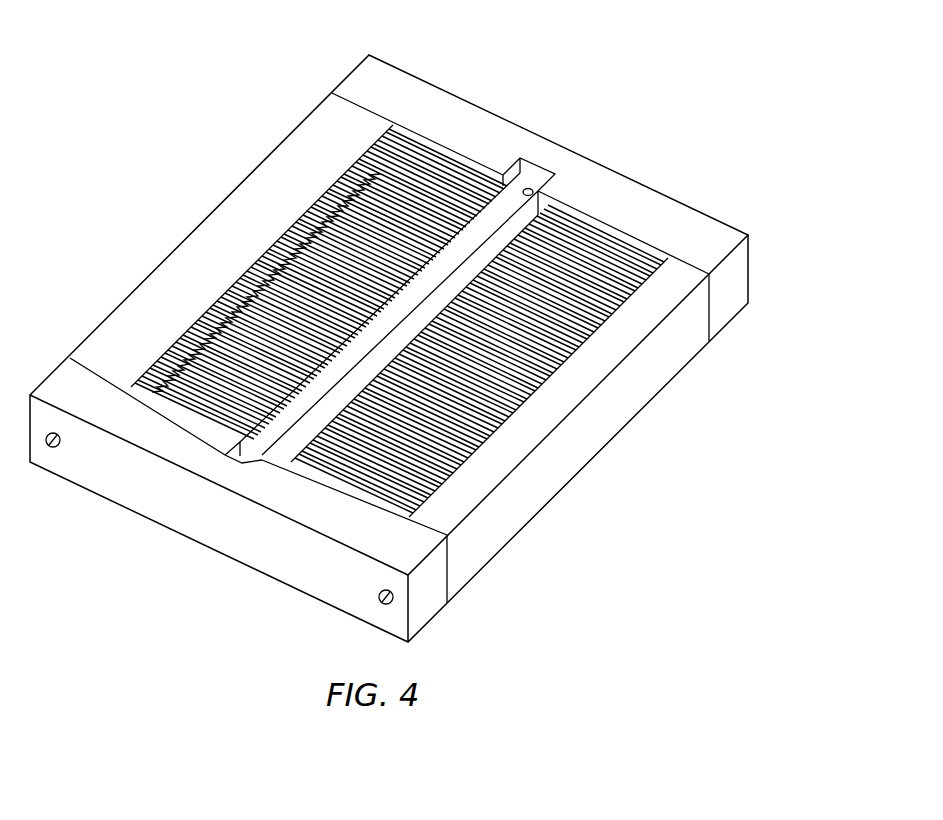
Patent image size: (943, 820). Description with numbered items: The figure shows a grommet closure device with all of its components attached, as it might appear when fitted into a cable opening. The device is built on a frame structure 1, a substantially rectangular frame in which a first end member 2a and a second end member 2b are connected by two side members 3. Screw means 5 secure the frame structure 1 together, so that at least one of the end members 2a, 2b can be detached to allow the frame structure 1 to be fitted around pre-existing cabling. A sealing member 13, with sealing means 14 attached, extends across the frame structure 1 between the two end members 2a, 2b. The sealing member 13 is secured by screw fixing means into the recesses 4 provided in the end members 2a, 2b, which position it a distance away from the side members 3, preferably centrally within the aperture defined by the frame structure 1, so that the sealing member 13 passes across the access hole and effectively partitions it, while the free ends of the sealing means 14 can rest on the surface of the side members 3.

The frame structure 1 is at (312, 48).
The first end member 2a is at (632, 188).
The second end member 2b is at (148, 508).
The side members 3 is at (200, 238).
The recesses 4 is at (532, 163).
The screw means 5 is at (52, 448).
The sealing member 13 is at (485, 215).
The sealing means 14 is at (343, 100).